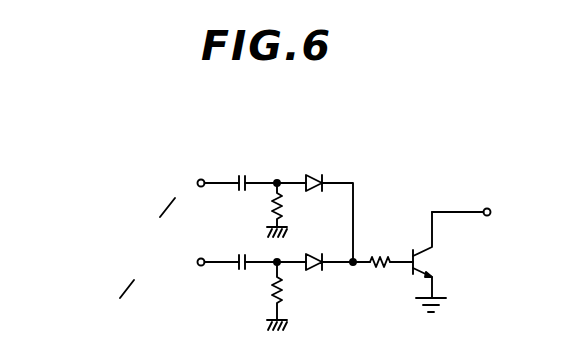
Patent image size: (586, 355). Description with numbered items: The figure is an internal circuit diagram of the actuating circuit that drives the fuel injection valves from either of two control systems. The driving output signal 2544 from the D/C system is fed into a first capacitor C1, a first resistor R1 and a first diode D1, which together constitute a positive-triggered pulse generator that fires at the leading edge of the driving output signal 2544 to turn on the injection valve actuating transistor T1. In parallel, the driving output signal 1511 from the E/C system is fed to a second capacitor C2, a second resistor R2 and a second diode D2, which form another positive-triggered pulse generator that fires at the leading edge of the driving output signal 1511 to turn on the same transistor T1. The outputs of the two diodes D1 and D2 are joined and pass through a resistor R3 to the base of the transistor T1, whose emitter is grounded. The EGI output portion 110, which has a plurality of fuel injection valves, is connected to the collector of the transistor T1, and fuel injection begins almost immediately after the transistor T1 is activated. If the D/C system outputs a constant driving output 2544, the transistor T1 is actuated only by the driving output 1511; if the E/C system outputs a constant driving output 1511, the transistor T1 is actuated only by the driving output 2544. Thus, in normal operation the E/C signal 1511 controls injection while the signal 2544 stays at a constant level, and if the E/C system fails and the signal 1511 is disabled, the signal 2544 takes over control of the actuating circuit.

The driving output signal 2544 is at (198, 184).
The driving output signal 1511 is at (198, 262).
The EGI output portion 110 is at (481, 213).
The first capacitor C1 is at (242, 170).
The second capacitor C2 is at (242, 250).
The first diode D1 is at (314, 171).
The second diode D2 is at (316, 278).
The first resistor R1 is at (288, 210).
The second resistor R2 is at (265, 296).
The resistor R3 is at (381, 251).
The injection valve actuating transistor T1 is at (437, 262).